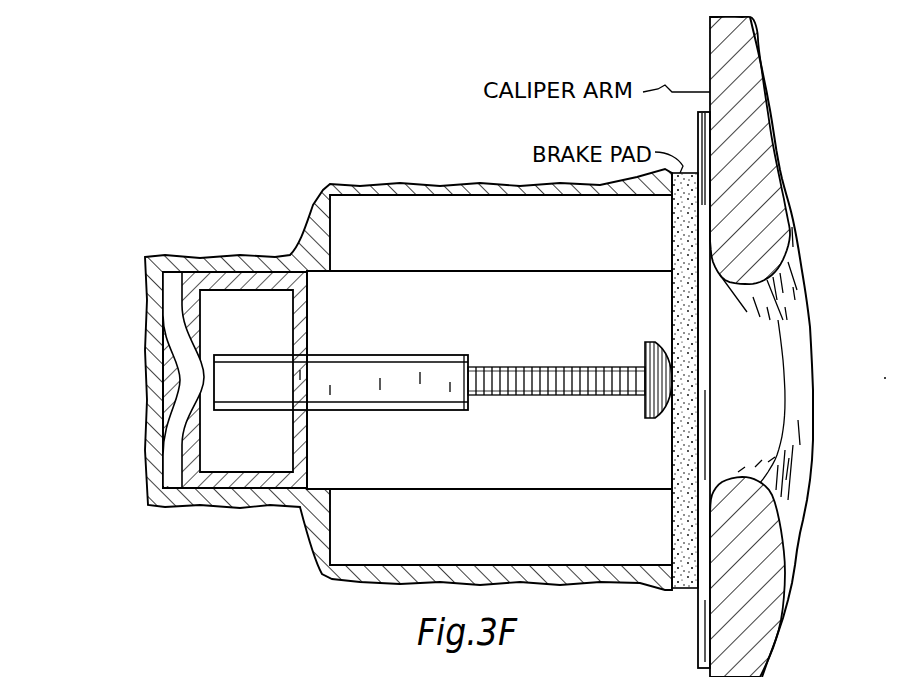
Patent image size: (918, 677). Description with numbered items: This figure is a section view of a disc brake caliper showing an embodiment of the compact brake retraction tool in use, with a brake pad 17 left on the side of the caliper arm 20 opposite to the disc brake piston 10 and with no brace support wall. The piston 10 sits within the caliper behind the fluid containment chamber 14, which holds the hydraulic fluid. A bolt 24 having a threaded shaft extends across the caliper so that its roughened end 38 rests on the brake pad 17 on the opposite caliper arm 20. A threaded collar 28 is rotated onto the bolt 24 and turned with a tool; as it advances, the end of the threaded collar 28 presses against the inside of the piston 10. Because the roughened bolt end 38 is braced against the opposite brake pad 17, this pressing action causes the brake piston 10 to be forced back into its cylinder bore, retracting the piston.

The disc brake piston 10 is at (247, 490).
The fluid containment chamber 14 is at (157, 502).
The disc brake pad opposite to disc brake piston 17 is at (670, 303).
The caliper arms 20 is at (790, 545).
The bolt having threaded shaft 24 is at (513, 396).
The threaded collar 28 is at (318, 373).
The roughened bolt end 38 is at (660, 418).